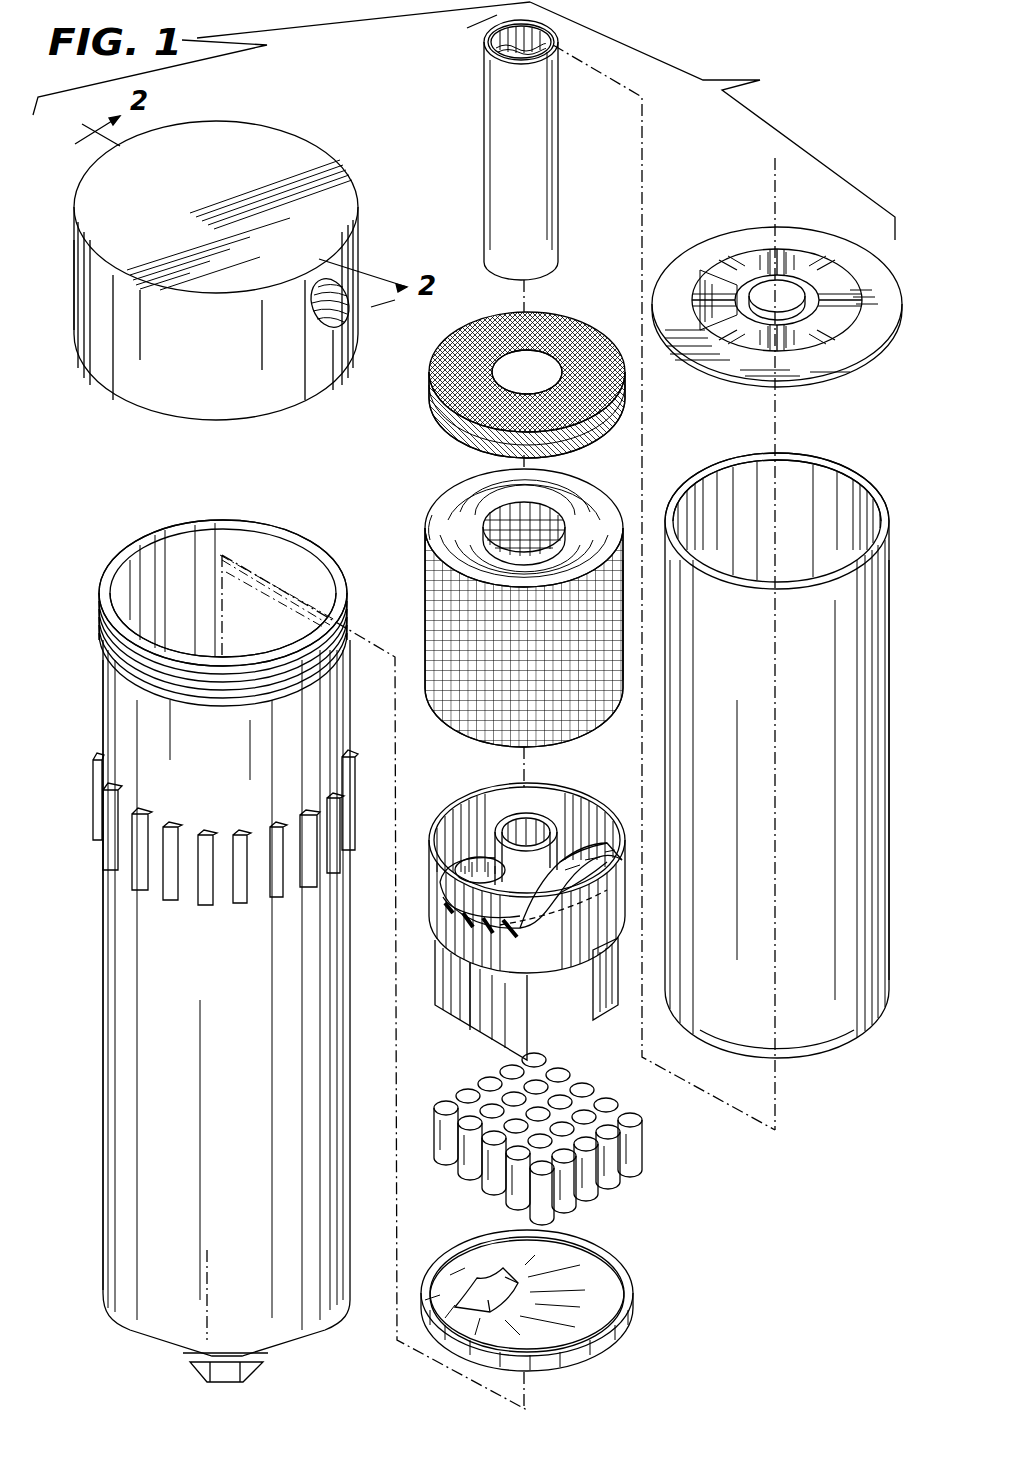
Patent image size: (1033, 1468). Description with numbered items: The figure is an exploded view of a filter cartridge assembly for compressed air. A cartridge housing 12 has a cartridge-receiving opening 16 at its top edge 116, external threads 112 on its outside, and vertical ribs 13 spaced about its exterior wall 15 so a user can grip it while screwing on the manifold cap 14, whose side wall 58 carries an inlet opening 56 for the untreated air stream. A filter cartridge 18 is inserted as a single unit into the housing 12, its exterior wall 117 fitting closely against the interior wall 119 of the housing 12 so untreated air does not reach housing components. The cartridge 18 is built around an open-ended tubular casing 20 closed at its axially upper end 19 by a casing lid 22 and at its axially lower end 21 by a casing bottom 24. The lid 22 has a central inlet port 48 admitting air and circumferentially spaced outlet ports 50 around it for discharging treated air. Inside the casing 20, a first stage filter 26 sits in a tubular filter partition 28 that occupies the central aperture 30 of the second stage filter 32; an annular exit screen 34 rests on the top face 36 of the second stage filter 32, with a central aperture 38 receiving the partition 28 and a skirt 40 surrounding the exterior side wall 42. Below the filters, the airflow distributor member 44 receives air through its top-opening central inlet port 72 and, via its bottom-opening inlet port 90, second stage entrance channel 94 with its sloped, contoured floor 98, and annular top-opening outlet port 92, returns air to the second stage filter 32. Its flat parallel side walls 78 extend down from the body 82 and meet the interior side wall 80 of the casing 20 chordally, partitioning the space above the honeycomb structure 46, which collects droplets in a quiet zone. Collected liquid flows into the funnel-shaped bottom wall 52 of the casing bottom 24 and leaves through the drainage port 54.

The cartridge housing 12 is at (102, 933).
The vertical ribs 13 is at (140, 830).
The manifold cap 14 is at (145, 400).
The exterior wall 15 is at (112, 723).
The cartridge-receiving opening 16 is at (175, 572).
The filter cartridge 18 is at (712, 121).
The axially upper end 19 is at (716, 464).
The tubular casing 20 is at (826, 1027).
The axially lower end 21 is at (800, 1052).
The casing lid 22 is at (820, 235).
The casing bottom 24 is at (628, 1340).
The first stage filter 26 is at (498, 60).
The tubular filter partition 28 is at (563, 178).
The central aperture 30 is at (545, 522).
The second stage filter 32 is at (432, 560).
The annular exit screen 34 is at (553, 315).
The top face 36 is at (445, 508).
The central aperture 38 is at (548, 360).
The skirt 40 is at (437, 426).
The exterior side wall 42 is at (604, 520).
The airflow distributor member 44 is at (458, 782).
The honeycomb structure 46 is at (625, 1180).
The central inlet port 48 is at (760, 285).
The outlet ports 50 is at (712, 262).
The funnel-shaped bottom wall 52 is at (596, 1278).
The drainage port 54 is at (484, 1290).
The inlet opening 56 is at (350, 320).
The side wall 58 is at (92, 284).
The central inlet port 72 is at (532, 828).
The side walls 78 is at (505, 1023).
The interior side wall 80 is at (800, 480).
The body 82 is at (478, 952).
The bottom-opening inlet port 90 is at (478, 860).
The annular top-opening outlet port 92 is at (583, 817).
The second stage entrance channel 94 is at (507, 805).
The floor 98 is at (580, 848).
The external threads 112 is at (135, 661).
The top edge 116 is at (122, 558).
The exterior wall 117 is at (766, 952).
The interior wall 119 is at (290, 563).